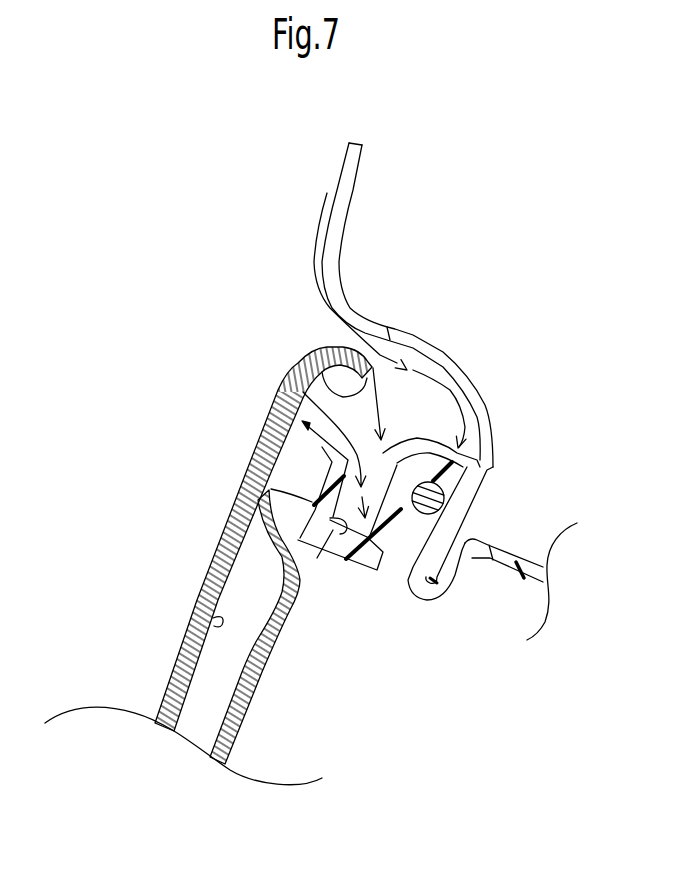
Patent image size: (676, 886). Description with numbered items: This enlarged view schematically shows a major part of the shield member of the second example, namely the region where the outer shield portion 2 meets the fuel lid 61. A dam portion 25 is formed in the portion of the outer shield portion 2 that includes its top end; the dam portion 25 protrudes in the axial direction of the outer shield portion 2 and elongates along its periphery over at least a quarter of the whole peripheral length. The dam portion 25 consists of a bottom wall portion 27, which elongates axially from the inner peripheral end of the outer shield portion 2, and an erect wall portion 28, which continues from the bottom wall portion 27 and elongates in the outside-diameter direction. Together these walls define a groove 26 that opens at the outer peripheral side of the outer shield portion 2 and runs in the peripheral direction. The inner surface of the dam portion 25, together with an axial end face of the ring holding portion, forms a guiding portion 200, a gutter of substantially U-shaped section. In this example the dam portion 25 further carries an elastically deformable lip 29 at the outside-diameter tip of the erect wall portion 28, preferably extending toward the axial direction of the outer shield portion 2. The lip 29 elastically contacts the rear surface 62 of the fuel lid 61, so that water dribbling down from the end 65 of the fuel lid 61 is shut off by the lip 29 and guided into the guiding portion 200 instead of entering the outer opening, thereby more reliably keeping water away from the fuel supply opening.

The outer shield portion 2 is at (395, 582).
The dam portion 25 is at (372, 560).
The groove 26 is at (330, 518).
The bottom wall portion 27 is at (337, 552).
The erect wall portion 28 is at (271, 489).
The lip 29 is at (322, 447).
The fuel lid 61 is at (210, 579).
The rear surface 62 is at (214, 620).
The end 65 is at (333, 383).
The guiding portion 200 is at (232, 522).